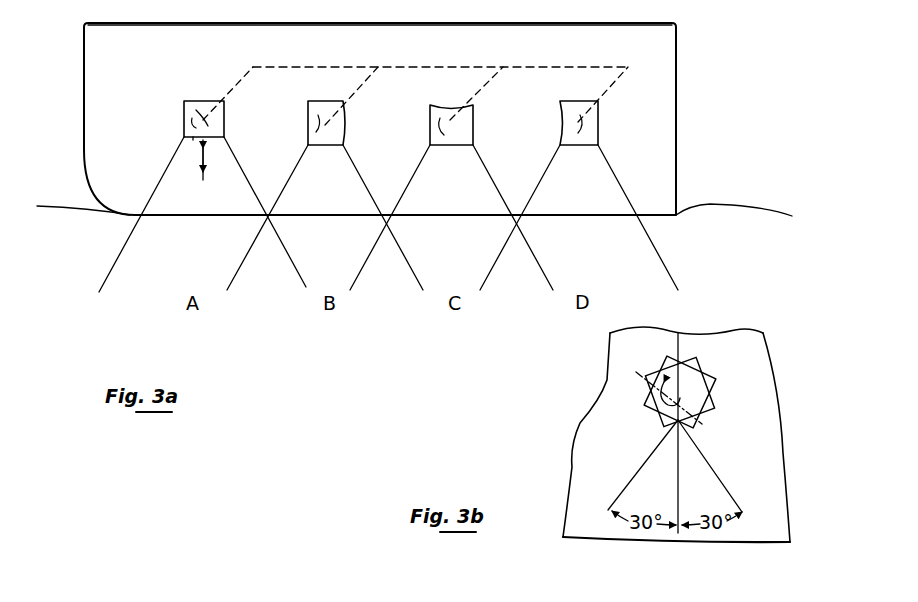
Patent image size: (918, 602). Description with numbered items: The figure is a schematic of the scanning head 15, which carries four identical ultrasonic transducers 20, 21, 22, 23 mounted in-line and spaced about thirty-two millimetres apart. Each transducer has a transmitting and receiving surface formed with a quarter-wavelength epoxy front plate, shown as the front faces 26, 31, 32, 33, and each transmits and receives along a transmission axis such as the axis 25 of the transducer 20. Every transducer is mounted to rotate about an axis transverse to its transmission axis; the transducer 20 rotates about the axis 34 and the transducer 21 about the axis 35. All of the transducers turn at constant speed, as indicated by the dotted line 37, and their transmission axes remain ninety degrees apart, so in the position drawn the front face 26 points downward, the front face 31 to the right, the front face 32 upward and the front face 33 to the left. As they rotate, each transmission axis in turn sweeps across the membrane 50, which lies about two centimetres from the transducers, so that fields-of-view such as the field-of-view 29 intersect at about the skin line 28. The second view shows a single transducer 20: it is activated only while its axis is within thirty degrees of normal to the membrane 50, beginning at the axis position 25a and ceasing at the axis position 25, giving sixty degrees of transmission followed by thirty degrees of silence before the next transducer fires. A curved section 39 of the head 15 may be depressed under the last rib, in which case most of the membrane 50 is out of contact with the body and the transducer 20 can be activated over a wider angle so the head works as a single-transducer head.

In FIG. 3a, the head 15 is at (676, 92).
In FIG. 3a, the ultrasonic transducer 20 is at (226, 114).
In FIG. 3b, the ultrasonic transducer 20 is at (708, 382).
In FIG. 3a, the ultrasonic transducer 21 is at (323, 145).
In FIG. 3a, the ultrasonic transducer 22 is at (450, 145).
In FIG. 3a, the ultrasonic transducer 23 is at (598, 122).
In FIG. 3a, the transmission axis 25 is at (210, 162).
In FIG. 3b, the transmission axis 25 is at (627, 478).
In FIG. 3b, the transmission axis position 25a is at (725, 477).
In FIG. 3a, the front face 26 is at (193, 142).
In FIG. 3b, the front face 26 is at (648, 400).
In FIG. 3a, the skin line 28 is at (732, 204).
In FIG. 3a, the field-of-view 29 is at (270, 248).
In FIG. 3a, the front face 31 is at (348, 117).
In FIG. 3a, the front face 32 is at (450, 106).
In FIG. 3a, the front face 33 is at (561, 122).
In FIG. 3a, the axis of rotation 34 is at (208, 118).
In FIG. 3b, the axis of rotation 34 is at (677, 357).
In FIG. 3a, the axis of rotation 35 is at (312, 116).
In FIG. 3a, the dotted line 37 is at (345, 67).
In FIG. 3a, the curved section 39 is at (102, 190).
In FIG. 3a, the membrane 50 is at (438, 217).